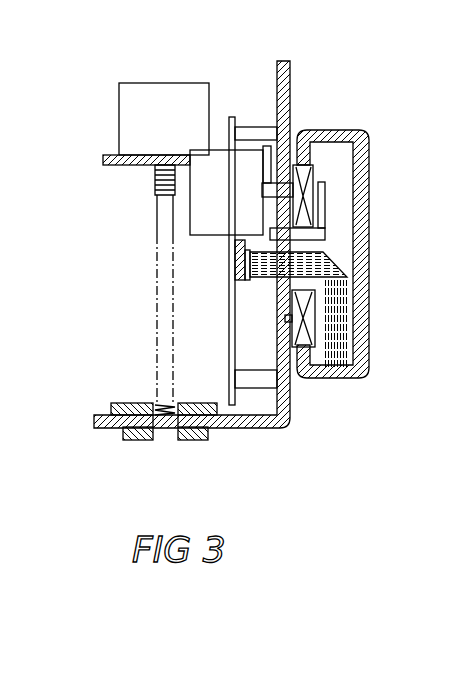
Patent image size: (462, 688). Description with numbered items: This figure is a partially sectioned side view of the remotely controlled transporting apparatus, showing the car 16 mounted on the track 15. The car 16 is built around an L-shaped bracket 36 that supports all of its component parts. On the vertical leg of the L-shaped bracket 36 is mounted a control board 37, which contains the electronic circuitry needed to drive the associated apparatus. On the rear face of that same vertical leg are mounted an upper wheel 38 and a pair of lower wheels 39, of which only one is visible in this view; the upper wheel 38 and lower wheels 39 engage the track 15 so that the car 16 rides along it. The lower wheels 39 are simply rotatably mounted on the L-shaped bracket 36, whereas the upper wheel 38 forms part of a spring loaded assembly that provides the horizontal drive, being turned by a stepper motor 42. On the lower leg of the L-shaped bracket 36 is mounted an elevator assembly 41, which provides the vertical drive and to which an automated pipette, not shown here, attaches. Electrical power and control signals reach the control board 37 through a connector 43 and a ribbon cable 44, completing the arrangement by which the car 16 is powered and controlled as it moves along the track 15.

The track 15 is at (365, 228).
The car 16 is at (322, 100).
The L-shaped bracket 36 is at (288, 62).
The control board 37 is at (233, 117).
The upper wheel 38 is at (316, 167).
The lower wheels 39 is at (316, 305).
The elevator assembly 41 is at (118, 99).
The stepper motor 42 is at (190, 220).
The connector 43 is at (238, 278).
The ribbon cable 44 is at (340, 265).